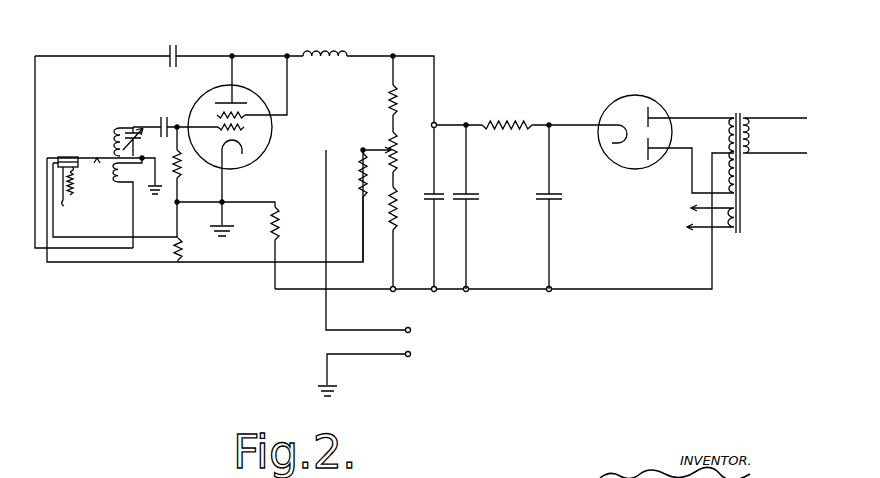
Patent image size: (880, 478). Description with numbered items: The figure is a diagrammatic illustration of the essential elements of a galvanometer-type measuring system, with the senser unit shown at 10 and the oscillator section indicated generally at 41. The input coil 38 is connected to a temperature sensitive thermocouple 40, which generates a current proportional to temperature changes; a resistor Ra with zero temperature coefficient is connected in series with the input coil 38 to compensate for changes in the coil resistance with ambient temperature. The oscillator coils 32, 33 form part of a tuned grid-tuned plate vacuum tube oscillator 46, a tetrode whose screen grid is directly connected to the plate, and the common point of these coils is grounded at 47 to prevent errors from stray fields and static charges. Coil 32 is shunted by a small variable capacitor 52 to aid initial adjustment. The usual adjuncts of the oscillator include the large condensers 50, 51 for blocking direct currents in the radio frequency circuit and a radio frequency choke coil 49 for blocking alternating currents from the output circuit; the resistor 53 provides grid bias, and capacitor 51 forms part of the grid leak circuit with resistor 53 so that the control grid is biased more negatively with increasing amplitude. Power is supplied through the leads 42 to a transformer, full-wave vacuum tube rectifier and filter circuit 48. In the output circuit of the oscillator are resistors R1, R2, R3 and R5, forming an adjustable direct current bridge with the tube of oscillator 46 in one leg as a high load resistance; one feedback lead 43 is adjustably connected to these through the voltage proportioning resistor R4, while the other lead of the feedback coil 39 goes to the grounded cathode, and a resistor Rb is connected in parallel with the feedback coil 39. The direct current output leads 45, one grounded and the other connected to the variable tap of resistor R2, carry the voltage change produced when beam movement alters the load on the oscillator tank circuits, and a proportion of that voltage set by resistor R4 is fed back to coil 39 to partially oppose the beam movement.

The photoelectric cell device 10 is at (100, 142).
The oscillator coil 32 is at (113, 126).
The oscillator coil 33 is at (118, 173).
The input coil 38 is at (72, 169).
The feedback coil 39 is at (74, 157).
The thermocouple 40 is at (68, 207).
The oscillator stage 41 is at (384, 173).
The power supply leads 42 is at (747, 173).
The feedback lead 43 is at (155, 237).
The direct current output leads 45 is at (378, 273).
The vacuum tube oscillator 46 is at (272, 136).
The ground connection 47 is at (160, 192).
The transformer full-wave vacuum tube rectifier and filter circuit 48 is at (661, 157).
The radio frequency choke coil 49 is at (327, 40).
The condenser 50 is at (182, 52).
The condenser 51 is at (168, 112).
The variable capacitor 52 is at (146, 143).
The resistor 53 is at (182, 170).
The resistor R1 is at (405, 100).
The resistor R2 is at (406, 152).
The resistor R3 is at (405, 208).
The voltage proportioning resistor R4 is at (350, 206).
The resistor R5 is at (280, 228).
The resistor Ra is at (115, 200).
The resistor Rb is at (193, 250).